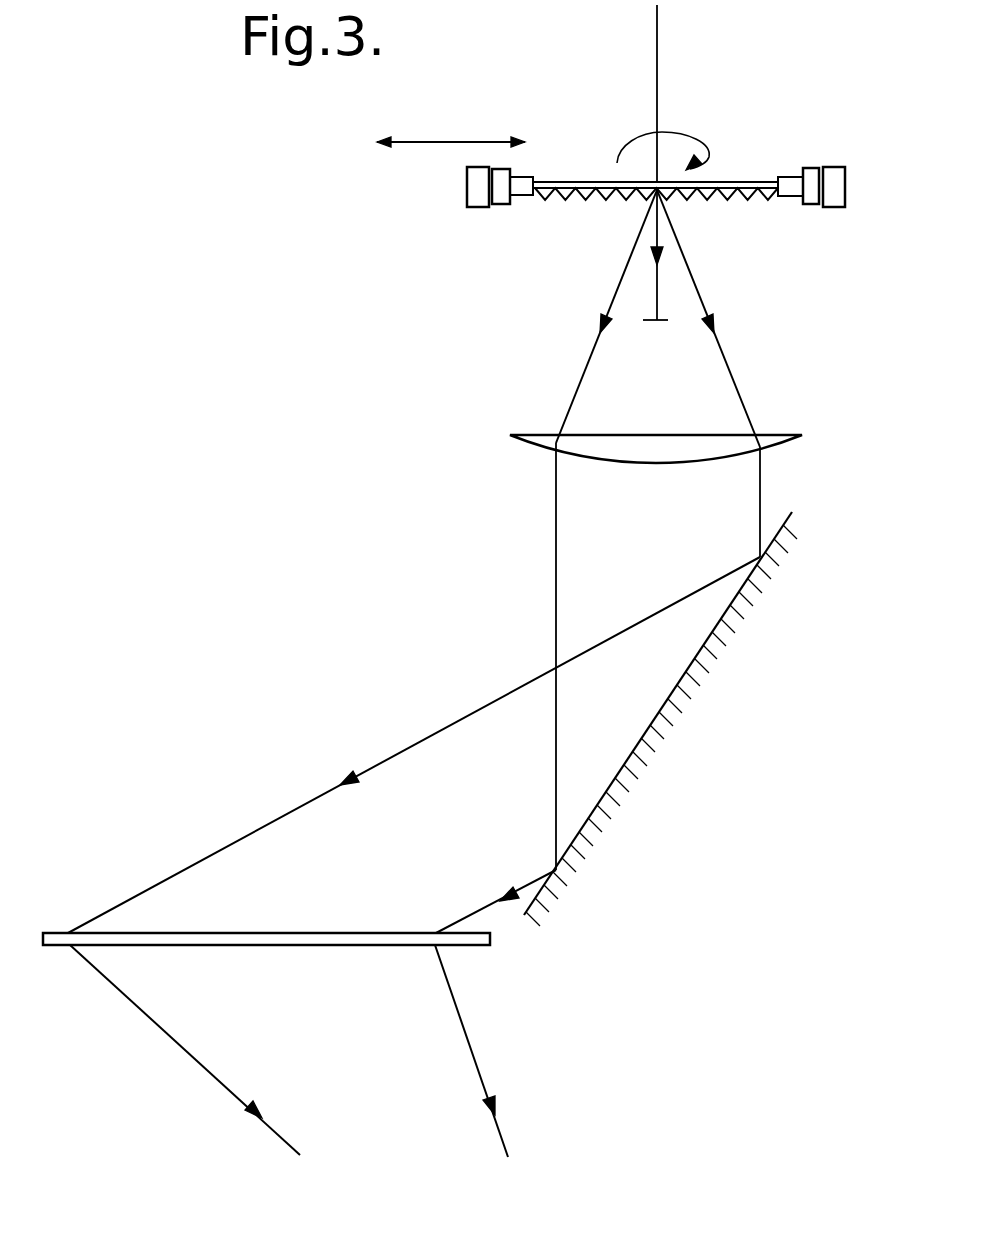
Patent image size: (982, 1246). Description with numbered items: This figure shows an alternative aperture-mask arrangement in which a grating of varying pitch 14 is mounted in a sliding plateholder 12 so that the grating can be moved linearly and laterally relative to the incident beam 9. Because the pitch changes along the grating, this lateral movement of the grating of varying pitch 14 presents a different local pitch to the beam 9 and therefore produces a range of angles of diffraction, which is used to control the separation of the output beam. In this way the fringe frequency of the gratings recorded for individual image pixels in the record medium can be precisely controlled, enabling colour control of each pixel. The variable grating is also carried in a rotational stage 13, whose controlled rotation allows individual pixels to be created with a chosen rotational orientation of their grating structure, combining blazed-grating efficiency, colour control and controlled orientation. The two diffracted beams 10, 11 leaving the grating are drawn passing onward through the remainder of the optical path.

The beam 9 is at (657, 40).
The first diffracted beam 10 is at (582, 378).
The second diffracted beam 11 is at (727, 362).
The sliding plateholder 12 is at (467, 183).
The rotational stage 13 is at (525, 205).
The grating of varying pitch 14 is at (775, 176).